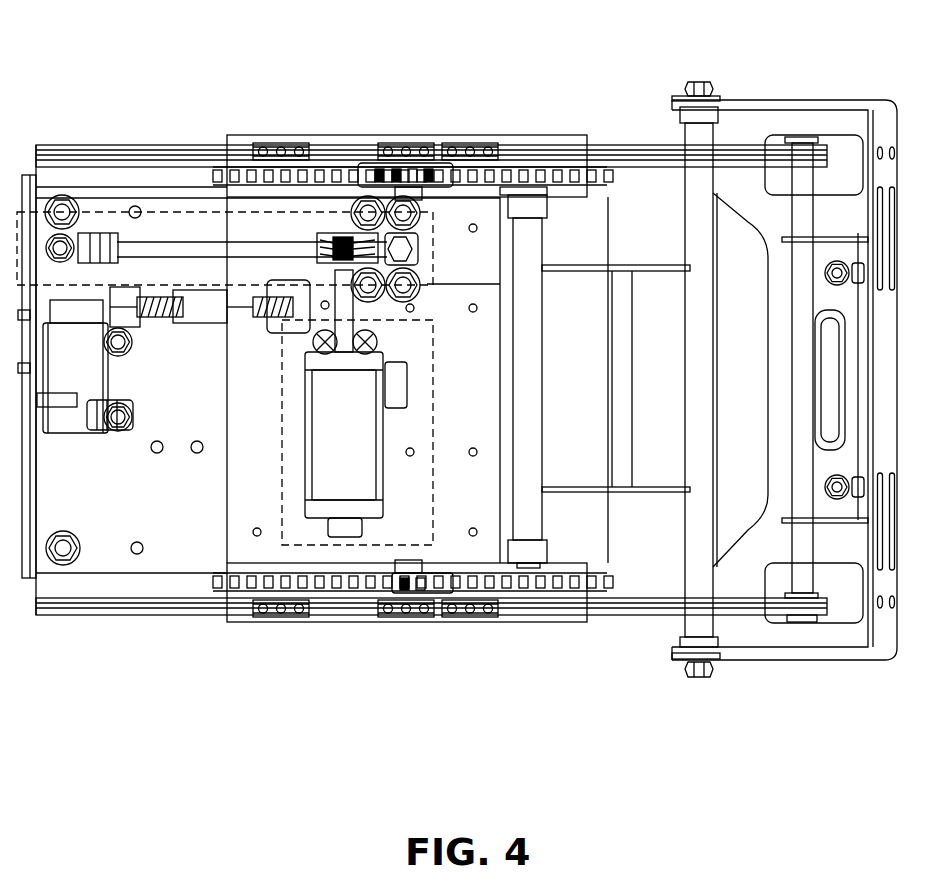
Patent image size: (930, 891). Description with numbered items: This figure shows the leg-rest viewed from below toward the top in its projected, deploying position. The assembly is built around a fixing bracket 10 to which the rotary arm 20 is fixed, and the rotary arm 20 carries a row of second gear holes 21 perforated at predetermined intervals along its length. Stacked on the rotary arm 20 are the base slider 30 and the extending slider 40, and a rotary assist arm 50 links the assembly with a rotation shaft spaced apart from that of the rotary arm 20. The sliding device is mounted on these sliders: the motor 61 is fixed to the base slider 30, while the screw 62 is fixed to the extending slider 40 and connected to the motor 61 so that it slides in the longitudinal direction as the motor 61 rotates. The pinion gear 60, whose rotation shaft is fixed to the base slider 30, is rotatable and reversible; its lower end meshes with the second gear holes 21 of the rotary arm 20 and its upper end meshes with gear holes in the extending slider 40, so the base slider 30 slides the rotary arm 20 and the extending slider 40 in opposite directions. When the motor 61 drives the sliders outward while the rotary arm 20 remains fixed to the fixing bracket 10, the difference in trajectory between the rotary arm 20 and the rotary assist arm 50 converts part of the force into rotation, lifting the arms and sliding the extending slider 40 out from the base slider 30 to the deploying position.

The fixing bracket 10 is at (790, 117).
The rotary arm 20 is at (635, 603).
The second gear holes 21 is at (595, 583).
The base slider 30 is at (523, 137).
The extending slider 40 is at (105, 172).
The rotary assist arm 50 is at (615, 280).
The pinion gear 60 is at (408, 173).
The motor 61 is at (347, 488).
The screw 62 is at (185, 247).